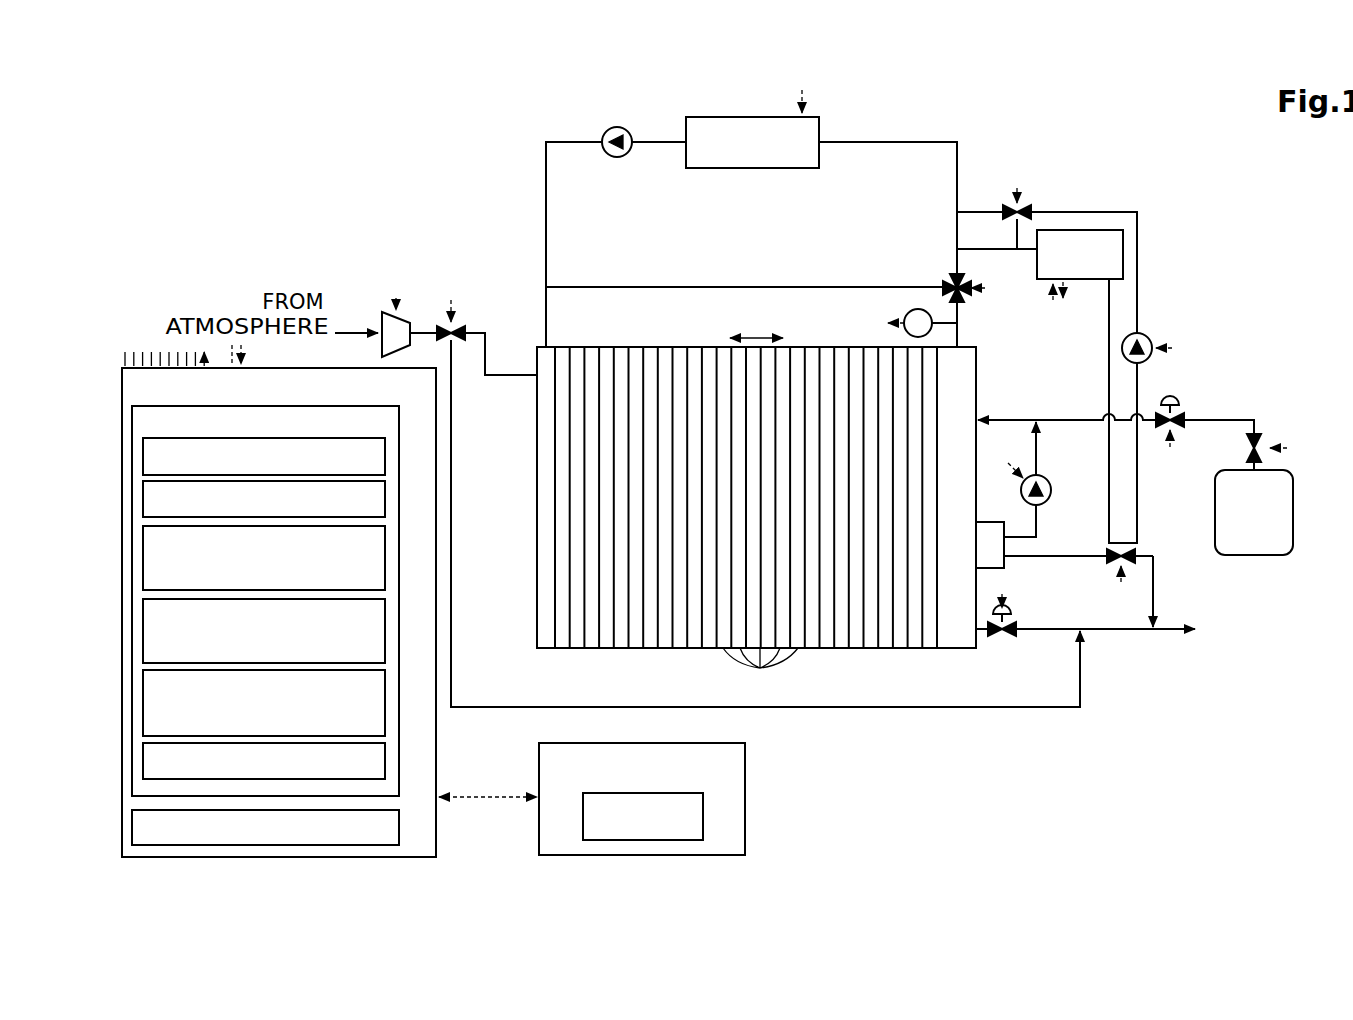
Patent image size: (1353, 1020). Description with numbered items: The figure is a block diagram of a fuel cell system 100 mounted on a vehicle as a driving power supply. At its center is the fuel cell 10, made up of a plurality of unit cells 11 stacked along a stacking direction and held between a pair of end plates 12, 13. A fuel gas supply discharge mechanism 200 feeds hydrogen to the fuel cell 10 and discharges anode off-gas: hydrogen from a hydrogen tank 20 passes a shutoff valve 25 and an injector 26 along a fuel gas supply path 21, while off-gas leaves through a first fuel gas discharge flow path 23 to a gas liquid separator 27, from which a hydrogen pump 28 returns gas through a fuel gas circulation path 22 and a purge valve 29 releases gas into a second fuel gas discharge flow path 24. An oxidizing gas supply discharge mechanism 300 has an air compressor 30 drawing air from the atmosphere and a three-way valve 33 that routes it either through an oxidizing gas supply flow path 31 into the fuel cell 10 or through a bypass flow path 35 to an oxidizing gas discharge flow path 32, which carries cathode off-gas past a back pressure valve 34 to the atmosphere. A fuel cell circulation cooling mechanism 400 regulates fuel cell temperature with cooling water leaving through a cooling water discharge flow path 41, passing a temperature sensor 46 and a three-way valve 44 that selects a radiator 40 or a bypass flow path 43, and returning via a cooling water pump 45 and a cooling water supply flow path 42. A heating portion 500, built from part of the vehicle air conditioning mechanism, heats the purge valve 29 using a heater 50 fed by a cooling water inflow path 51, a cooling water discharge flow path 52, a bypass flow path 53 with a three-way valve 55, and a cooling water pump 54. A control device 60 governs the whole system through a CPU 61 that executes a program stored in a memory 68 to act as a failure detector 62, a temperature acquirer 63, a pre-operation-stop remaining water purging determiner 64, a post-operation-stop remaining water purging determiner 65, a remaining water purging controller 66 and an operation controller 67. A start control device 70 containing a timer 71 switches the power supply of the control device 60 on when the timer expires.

The fuel cell system 100 is at (1155, 132).
The fuel cell 10 is at (719, 503).
The unit cells 11 is at (746, 522).
The end plate 12 is at (956, 650).
The end plate 13 is at (542, 650).
The fuel gas supply discharge mechanism 200 is at (1232, 360).
The hydrogen tank 20 is at (1254, 555).
The fuel gas supply path 21 is at (1215, 420).
The fuel gas circulation path 22 is at (1040, 537).
The first fuel gas discharge flow path 23 is at (1050, 557).
The second fuel gas discharge flow path 24 is at (1153, 600).
The shutoff valve 25 is at (1262, 440).
The injector 26 is at (1170, 405).
The gas liquid separator 27 is at (990, 521).
The hydrogen pump 28 is at (1051, 488).
The purge valve 29 is at (1135, 549).
The oxidizing gas supply discharge mechanism 300 is at (432, 255).
The air compressor 30 is at (382, 312).
The oxidizing gas supply flow path 31 is at (520, 373).
The oxidizing gas discharge flow path 32 is at (1126, 630).
The three-way valve 33 is at (445, 325).
The back pressure valve 34 is at (1003, 640).
The bypass flow path 35 is at (455, 555).
The fuel cell circulation cooling mechanism 400 is at (905, 125).
The radiator 40 is at (738, 117).
The cooling water discharge flow path 41 is at (958, 338).
The cooling water supply flow path 42 is at (546, 240).
The bypass flow path 43 is at (730, 287).
The three-way valve 44 is at (952, 282).
The cooling water pump 45 is at (612, 130).
The temperature sensor 46 is at (905, 313).
The heating portion 500 is at (1150, 218).
The heater 50 is at (1082, 280).
The cooling water inflow path 51 is at (985, 250).
The cooling water discharge flow path 52 is at (1108, 395).
The bypass flow path 53 is at (1012, 230).
The cooling water pump 54 is at (1152, 338).
The three-way valve 55 is at (1025, 205).
The control device 60 is at (285, 368).
The CPU 61 is at (358, 405).
The failure detector 62 is at (386, 468).
The temperature acquirer 63 is at (386, 510).
The pre-operation-stop remaining water purging determiner 64 is at (386, 581).
The post-operation-stop remaining water purging determiner 65 is at (386, 645).
The remaining water purging controller 66 is at (386, 718).
The operation controller 67 is at (386, 772).
The memory 68 is at (386, 838).
The start control device 70 is at (620, 742).
The timer 71 is at (703, 817).